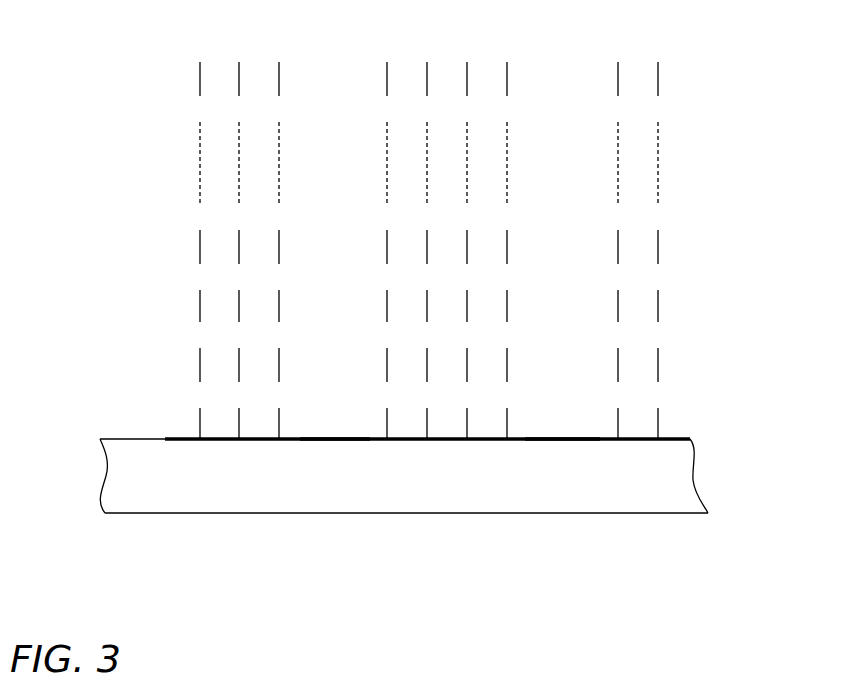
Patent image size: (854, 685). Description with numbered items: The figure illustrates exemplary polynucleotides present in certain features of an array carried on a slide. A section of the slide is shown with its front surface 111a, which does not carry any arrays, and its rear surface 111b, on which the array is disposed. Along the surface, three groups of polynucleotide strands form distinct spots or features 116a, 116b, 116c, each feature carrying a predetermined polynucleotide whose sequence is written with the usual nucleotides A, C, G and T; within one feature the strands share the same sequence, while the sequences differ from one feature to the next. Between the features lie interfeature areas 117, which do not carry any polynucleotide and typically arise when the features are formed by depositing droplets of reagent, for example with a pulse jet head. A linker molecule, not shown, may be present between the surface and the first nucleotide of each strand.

The front surface 111a is at (163, 438).
The rear surface 111b is at (652, 513).
The feature 116a is at (292, 442).
The feature 116b is at (378, 442).
The feature 116c is at (668, 442).
The interfeature area 117 is at (332, 438).